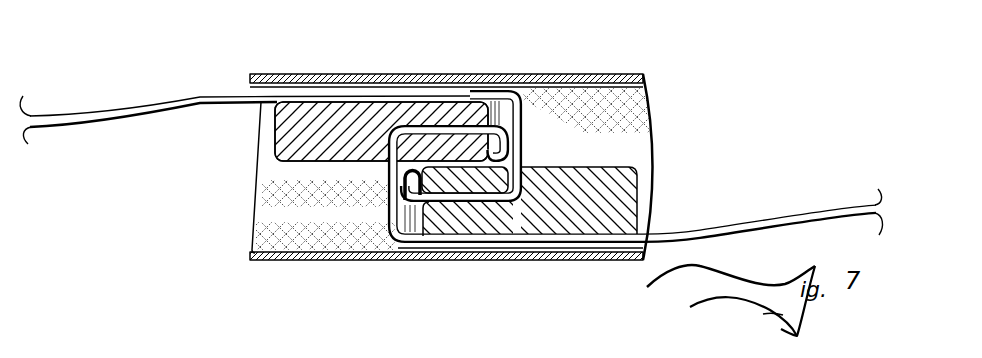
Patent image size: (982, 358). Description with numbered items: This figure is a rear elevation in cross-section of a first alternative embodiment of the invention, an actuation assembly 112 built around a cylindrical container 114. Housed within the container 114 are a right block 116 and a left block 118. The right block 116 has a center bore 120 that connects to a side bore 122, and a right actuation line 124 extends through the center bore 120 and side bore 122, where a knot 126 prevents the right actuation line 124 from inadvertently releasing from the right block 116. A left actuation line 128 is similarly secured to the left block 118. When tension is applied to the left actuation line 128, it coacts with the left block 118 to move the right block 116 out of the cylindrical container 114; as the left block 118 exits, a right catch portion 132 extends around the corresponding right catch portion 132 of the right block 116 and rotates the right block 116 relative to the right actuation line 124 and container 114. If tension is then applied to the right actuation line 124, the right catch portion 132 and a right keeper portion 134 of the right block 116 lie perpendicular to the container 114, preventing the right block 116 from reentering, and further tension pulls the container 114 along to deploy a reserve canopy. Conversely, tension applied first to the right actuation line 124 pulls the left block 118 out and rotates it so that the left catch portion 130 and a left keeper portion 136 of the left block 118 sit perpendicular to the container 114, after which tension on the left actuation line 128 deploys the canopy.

The first alternative actuation assembly 112 is at (386, 145).
The cylindrical container 114 is at (263, 113).
The right block 116 is at (473, 72).
The left block 118 is at (557, 233).
The center bore 120 is at (392, 158).
The side bore 122 is at (430, 127).
The right actuation line 124 is at (730, 227).
The knot 126 is at (500, 147).
The left actuation line 128 is at (143, 107).
The left catch portion 130 is at (478, 223).
The right catch portion 132 is at (397, 110).
The right keeper portion 134 is at (298, 120).
The left keeper portion 136 is at (613, 193).